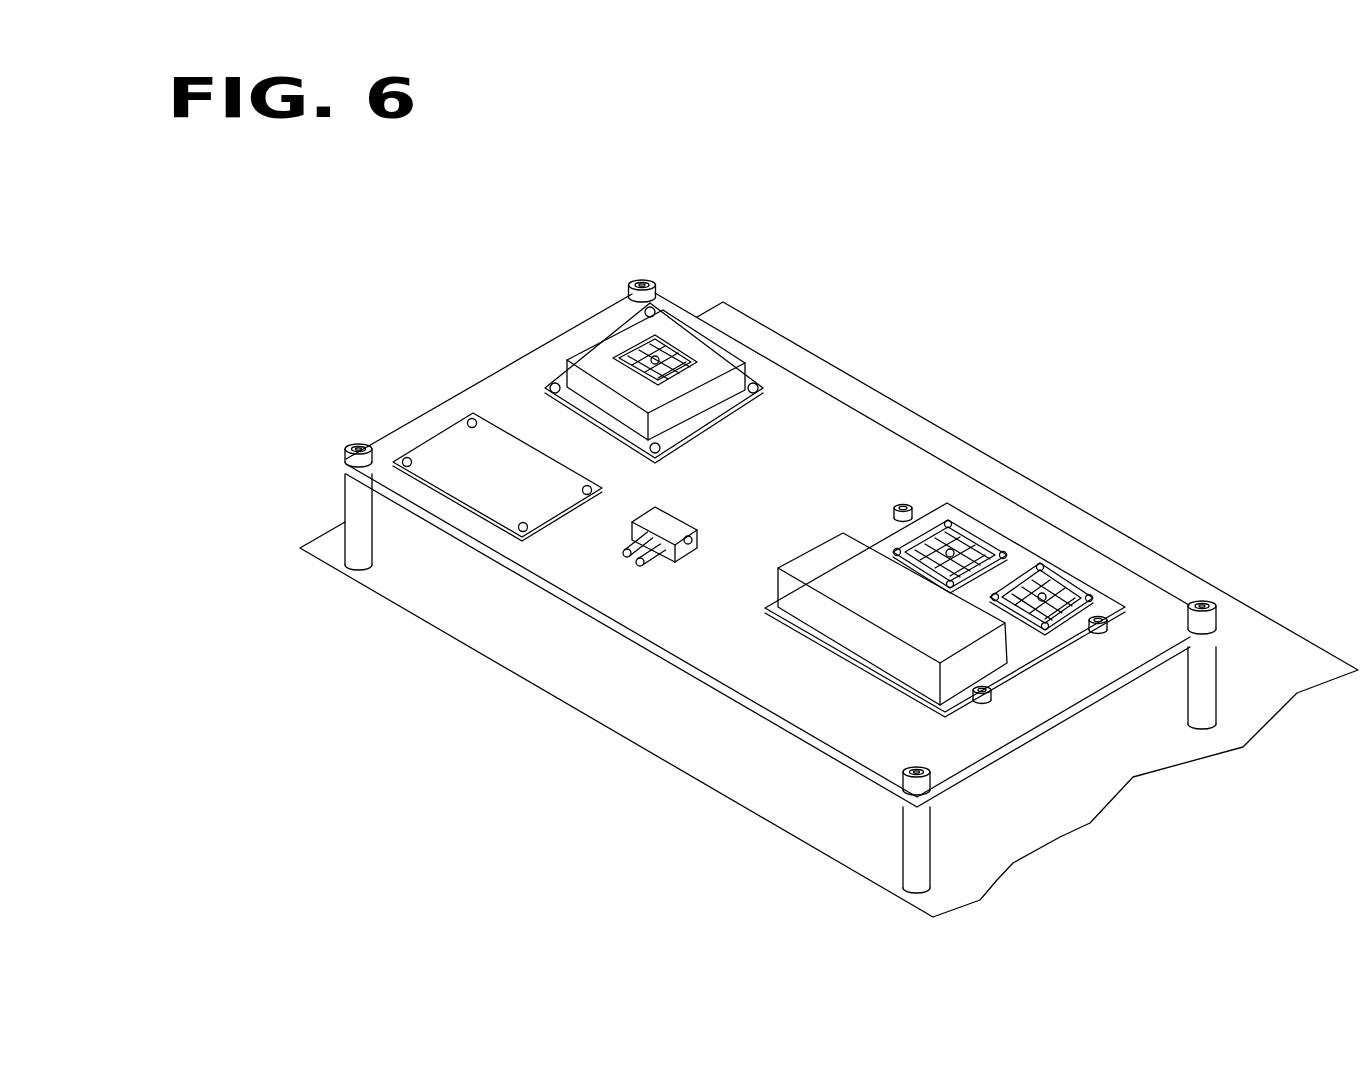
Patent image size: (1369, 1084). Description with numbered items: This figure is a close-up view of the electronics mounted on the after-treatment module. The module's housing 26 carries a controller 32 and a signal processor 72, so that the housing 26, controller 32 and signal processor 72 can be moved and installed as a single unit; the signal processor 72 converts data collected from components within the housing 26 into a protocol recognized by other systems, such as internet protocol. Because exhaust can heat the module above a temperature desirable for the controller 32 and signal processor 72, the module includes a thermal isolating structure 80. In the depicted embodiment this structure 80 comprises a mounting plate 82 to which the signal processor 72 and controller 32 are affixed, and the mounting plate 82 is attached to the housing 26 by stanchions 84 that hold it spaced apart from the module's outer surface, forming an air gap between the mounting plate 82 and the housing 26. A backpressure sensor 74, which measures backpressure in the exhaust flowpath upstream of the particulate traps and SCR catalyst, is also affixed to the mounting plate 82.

The housing 26 is at (952, 445).
The controller 32 is at (835, 632).
The signal processor 72 is at (712, 347).
The backpressure sensor 74 is at (622, 545).
The thermal isolating structure 80 is at (1024, 764).
The mounting plate 82 is at (1100, 565).
The stanchions 84 is at (352, 512).